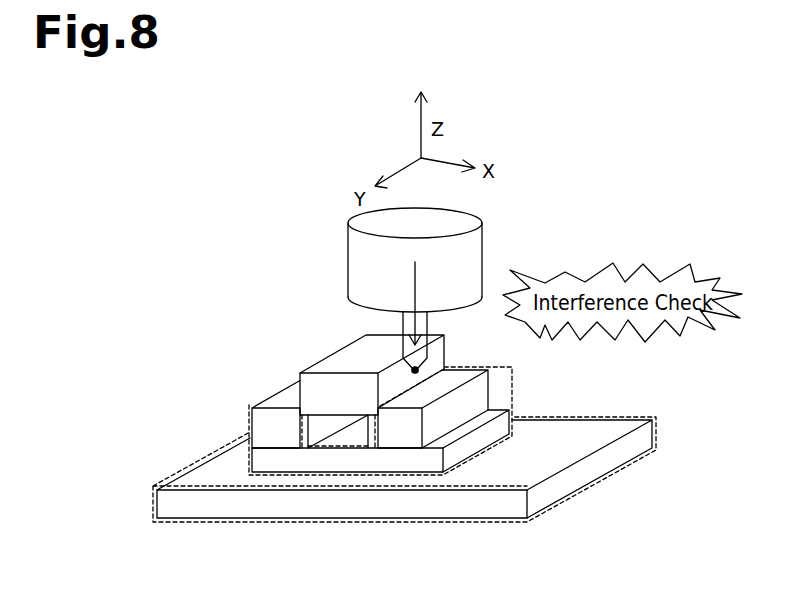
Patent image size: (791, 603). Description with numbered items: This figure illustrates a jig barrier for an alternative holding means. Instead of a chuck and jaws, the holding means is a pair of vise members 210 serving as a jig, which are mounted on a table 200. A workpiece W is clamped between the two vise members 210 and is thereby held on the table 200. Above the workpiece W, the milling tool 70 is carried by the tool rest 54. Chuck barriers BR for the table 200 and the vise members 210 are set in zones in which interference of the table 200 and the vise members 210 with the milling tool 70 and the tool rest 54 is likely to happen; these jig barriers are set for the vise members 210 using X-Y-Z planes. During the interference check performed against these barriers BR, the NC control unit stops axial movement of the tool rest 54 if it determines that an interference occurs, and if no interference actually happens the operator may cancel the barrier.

The tool rest 54 is at (478, 238).
The milling tool 70 is at (403, 320).
The vise members 210 is at (262, 420).
The table 200 is at (265, 507).
The workpiece W is at (304, 366).
The chuck barriers BR is at (514, 385).